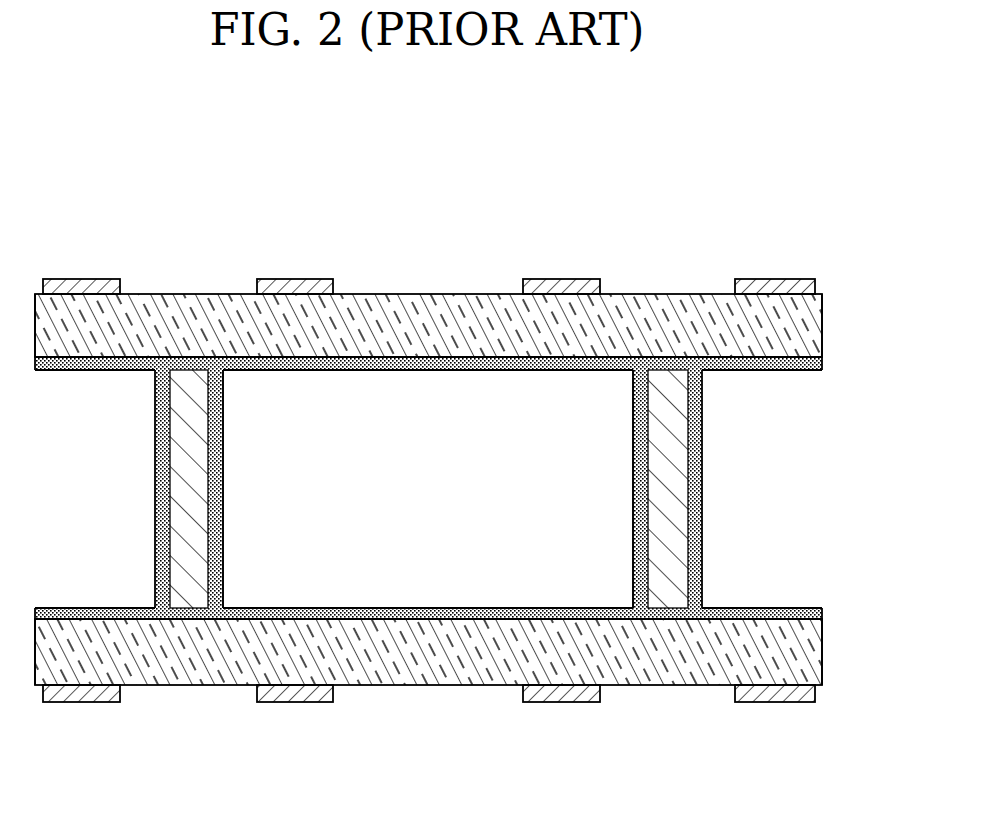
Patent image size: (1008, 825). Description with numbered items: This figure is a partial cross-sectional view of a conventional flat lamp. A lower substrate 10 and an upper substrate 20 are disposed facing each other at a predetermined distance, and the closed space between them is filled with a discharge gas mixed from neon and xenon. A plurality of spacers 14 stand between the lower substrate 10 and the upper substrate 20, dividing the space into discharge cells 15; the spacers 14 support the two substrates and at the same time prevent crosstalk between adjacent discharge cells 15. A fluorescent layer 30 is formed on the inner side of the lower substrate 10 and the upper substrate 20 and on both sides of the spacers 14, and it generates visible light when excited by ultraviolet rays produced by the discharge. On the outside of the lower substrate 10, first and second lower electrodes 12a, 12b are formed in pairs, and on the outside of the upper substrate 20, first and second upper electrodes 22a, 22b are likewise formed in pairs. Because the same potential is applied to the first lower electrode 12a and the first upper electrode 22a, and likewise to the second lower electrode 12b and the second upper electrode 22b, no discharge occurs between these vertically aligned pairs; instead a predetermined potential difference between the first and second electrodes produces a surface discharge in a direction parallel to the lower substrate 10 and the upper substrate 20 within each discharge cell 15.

The lower substrate 10 is at (815, 655).
The upper substrate 20 is at (813, 327).
The fluorescent layer 30 is at (817, 368).
The spacer 14 is at (675, 527).
The discharge cell 15 is at (415, 503).
The first lower electrode 12a is at (83, 702).
The second lower electrode 12b is at (562, 702).
The first upper electrode 22a is at (82, 278).
The second upper electrode 22b is at (562, 278).